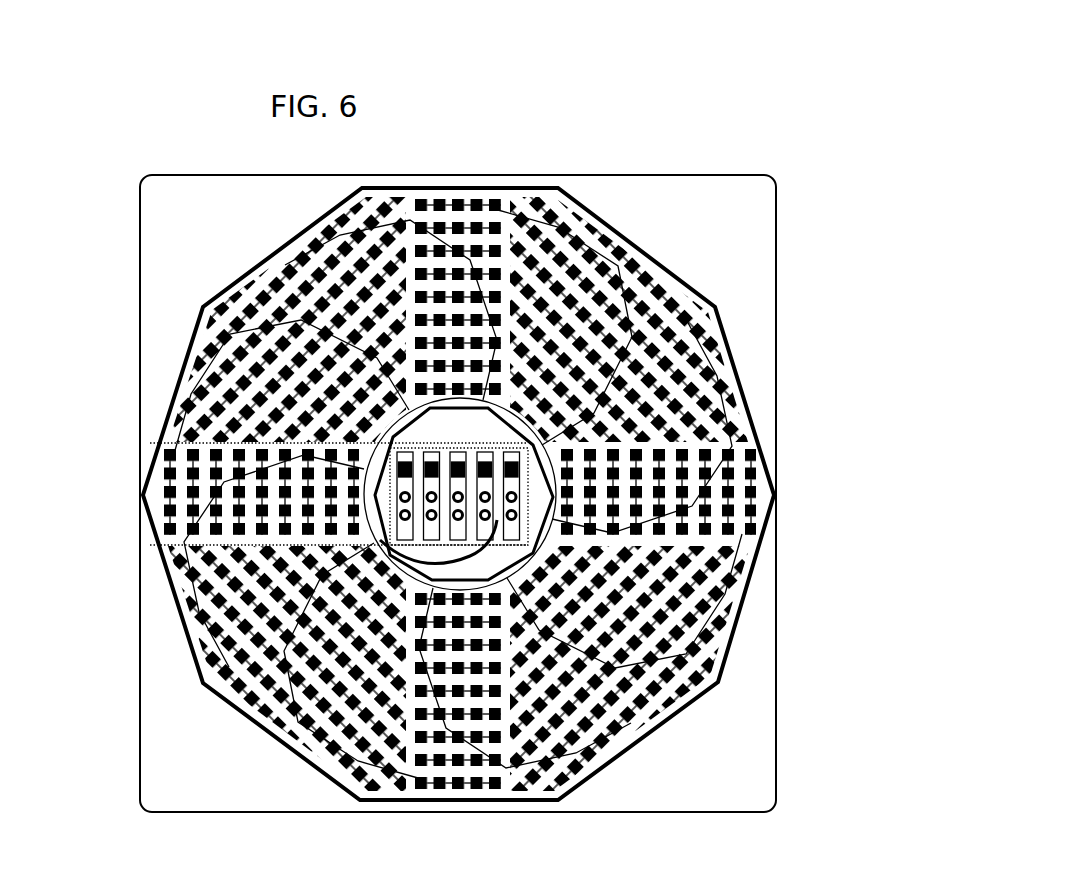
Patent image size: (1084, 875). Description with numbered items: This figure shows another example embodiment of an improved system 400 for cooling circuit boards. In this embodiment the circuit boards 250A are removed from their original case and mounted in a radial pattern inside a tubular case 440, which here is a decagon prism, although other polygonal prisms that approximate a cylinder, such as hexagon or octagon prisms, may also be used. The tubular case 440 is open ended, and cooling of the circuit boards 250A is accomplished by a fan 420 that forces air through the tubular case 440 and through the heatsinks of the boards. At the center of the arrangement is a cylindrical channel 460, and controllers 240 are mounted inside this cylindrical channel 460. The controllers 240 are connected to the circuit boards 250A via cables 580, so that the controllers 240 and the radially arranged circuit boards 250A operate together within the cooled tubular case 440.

The improved system 400 is at (782, 142).
The circuit boards 250A is at (541, 494).
The fan 420 is at (740, 441).
The tubular case 440 is at (723, 653).
The cylindrical channel 460 is at (152, 443).
The cables 580 is at (153, 545).
The controllers 240 is at (447, 448).